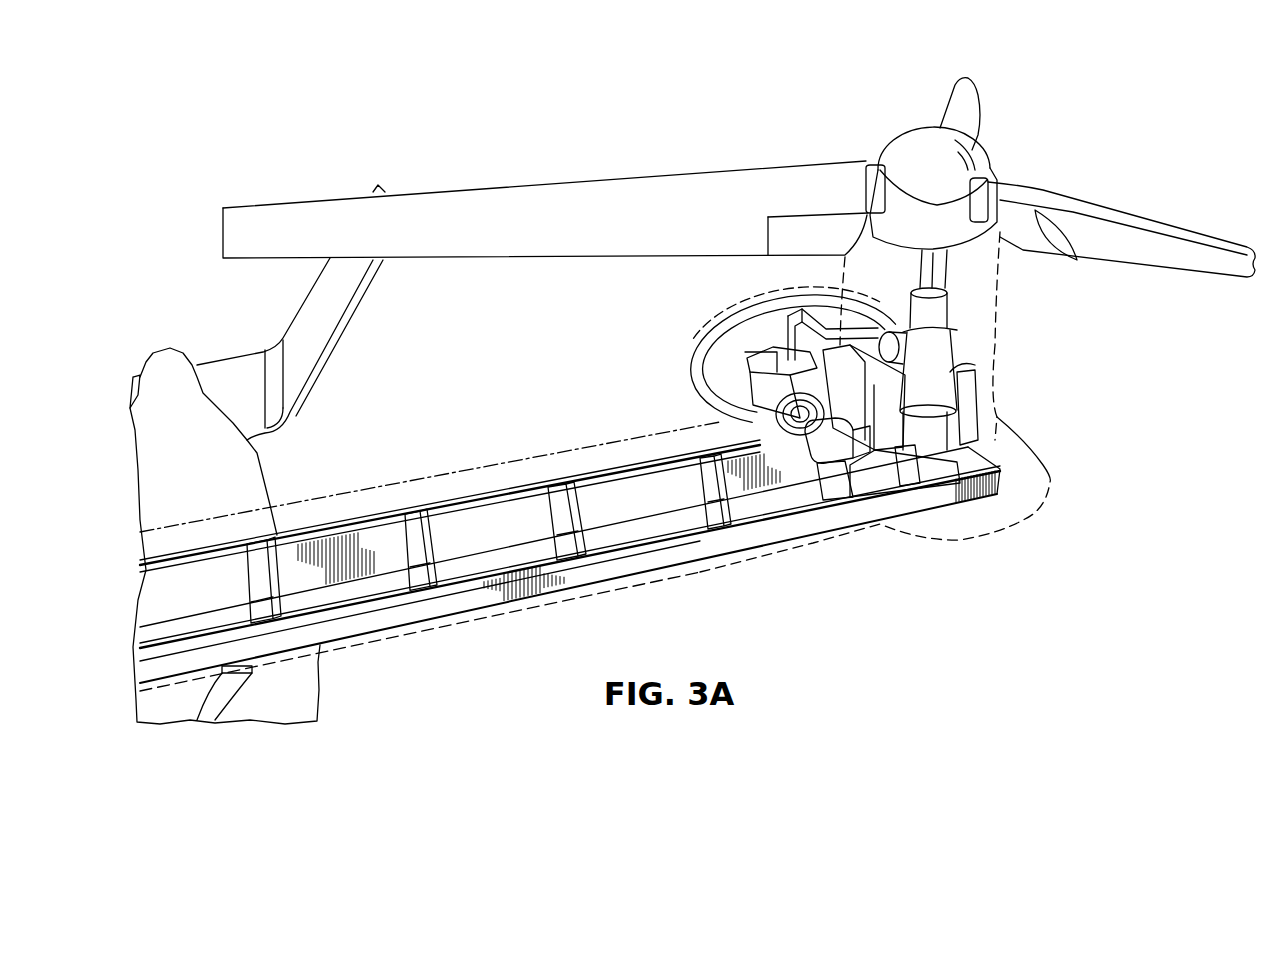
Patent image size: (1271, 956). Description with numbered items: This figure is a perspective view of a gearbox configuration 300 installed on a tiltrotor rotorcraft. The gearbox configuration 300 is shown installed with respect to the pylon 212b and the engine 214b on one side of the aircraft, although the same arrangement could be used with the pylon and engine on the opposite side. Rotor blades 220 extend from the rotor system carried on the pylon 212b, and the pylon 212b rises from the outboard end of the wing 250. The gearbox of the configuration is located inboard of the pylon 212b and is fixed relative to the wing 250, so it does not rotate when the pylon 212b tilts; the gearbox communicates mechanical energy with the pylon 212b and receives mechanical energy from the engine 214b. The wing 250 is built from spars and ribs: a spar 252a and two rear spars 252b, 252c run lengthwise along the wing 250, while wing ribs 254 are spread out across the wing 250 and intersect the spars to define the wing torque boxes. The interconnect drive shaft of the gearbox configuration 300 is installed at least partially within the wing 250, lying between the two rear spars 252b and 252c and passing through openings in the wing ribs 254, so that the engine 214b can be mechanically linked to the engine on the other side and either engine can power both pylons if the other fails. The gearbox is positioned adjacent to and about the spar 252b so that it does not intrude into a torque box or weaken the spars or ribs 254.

The blades 220 is at (502, 188).
The pylon 212b is at (997, 333).
The engine 214b is at (716, 396).
The wing 250 is at (570, 554).
The spar 252a is at (378, 620).
The rear spar 252b is at (378, 550).
The rear spar 252c is at (317, 535).
The wing ribs 254 is at (575, 512).
The gearbox configuration 300 is at (1058, 396).